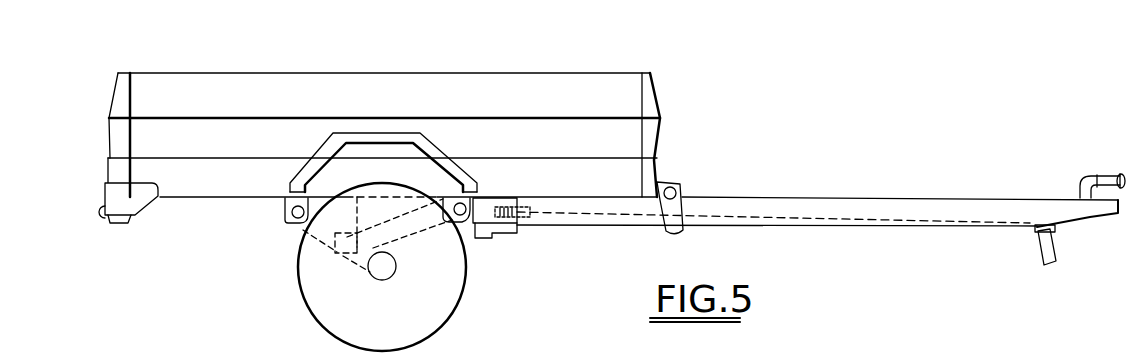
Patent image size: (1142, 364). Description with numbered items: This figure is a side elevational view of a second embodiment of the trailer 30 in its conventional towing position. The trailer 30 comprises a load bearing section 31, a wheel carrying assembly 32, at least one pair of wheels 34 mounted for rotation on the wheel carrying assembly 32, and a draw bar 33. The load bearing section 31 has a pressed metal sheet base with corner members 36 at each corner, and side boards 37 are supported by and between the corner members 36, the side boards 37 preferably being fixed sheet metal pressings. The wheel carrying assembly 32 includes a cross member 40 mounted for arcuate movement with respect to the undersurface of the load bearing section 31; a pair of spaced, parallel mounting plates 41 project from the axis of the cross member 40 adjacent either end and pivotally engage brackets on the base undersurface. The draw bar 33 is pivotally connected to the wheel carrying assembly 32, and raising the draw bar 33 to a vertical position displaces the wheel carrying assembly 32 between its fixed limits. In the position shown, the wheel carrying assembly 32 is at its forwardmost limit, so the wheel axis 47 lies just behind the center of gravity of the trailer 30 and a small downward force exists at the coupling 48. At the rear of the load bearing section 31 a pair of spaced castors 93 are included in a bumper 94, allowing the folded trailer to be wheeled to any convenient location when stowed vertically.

The trailer 30 is at (740, 122).
The load bearing section 31 is at (418, 72).
The wheel carrying assembly 32 is at (298, 258).
The draw bar 33 is at (912, 198).
The wheels 34 is at (453, 282).
The corner members 36 is at (118, 78).
The side boards 37 is at (384, 101).
The cross member 40 is at (337, 253).
The mounting plates 41 is at (293, 222).
The wheel axis 47 is at (378, 272).
The coupling 48 is at (1070, 208).
The castors 93 is at (100, 214).
The bumper 94 is at (124, 205).